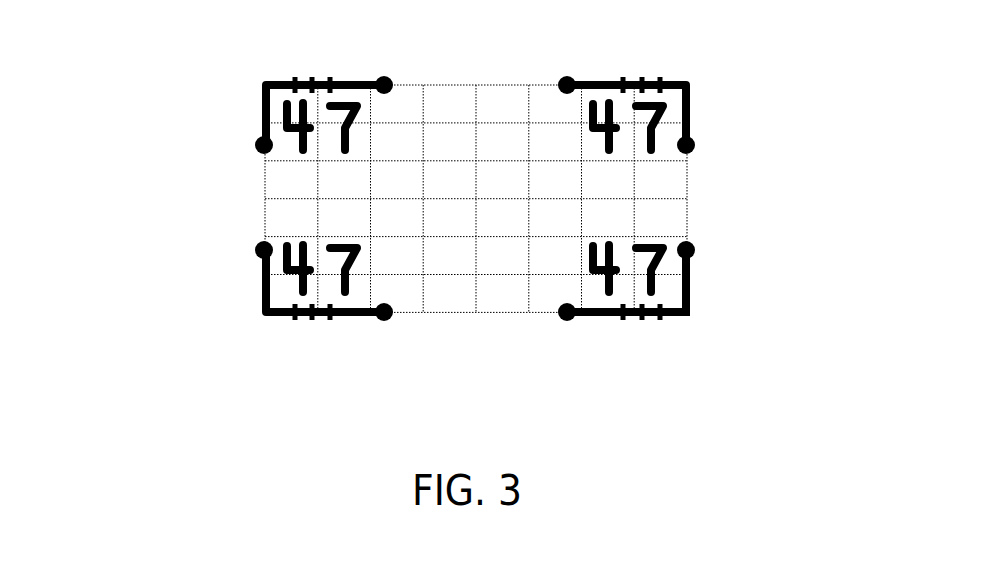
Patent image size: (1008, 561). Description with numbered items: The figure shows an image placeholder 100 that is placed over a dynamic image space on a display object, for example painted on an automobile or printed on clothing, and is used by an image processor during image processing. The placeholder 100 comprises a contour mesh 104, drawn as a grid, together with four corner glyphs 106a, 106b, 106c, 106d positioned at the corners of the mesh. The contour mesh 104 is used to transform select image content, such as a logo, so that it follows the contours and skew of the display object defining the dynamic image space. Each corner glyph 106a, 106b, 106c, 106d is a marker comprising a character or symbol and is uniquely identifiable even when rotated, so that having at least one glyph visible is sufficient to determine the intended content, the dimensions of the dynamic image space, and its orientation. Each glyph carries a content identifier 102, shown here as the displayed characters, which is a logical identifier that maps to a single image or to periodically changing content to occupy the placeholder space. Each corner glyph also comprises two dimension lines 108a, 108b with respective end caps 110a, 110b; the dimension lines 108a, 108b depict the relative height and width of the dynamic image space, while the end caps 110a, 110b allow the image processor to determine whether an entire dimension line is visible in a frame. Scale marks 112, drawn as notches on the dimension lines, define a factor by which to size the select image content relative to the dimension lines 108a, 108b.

The image placeholder 100 is at (207, 135).
The content identifier 102 is at (330, 148).
The contour mesh 104 is at (442, 258).
The corner glyph 106a is at (280, 77).
The corner glyph 106b is at (692, 73).
The corner glyph 106c is at (690, 323).
The corner glyph 106d is at (257, 322).
The dimension line 108a is at (610, 315).
The dimension line 108b is at (690, 283).
The end cap 110a is at (569, 318).
The end cap 110b is at (690, 251).
The scale marks 112 is at (282, 320).